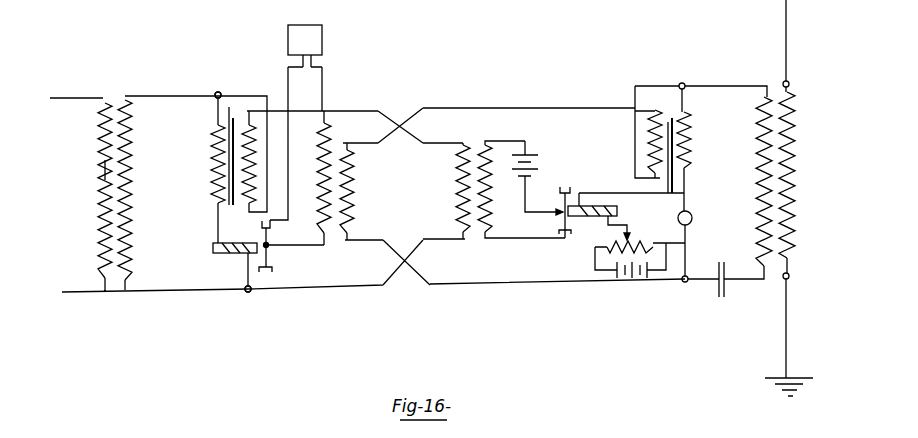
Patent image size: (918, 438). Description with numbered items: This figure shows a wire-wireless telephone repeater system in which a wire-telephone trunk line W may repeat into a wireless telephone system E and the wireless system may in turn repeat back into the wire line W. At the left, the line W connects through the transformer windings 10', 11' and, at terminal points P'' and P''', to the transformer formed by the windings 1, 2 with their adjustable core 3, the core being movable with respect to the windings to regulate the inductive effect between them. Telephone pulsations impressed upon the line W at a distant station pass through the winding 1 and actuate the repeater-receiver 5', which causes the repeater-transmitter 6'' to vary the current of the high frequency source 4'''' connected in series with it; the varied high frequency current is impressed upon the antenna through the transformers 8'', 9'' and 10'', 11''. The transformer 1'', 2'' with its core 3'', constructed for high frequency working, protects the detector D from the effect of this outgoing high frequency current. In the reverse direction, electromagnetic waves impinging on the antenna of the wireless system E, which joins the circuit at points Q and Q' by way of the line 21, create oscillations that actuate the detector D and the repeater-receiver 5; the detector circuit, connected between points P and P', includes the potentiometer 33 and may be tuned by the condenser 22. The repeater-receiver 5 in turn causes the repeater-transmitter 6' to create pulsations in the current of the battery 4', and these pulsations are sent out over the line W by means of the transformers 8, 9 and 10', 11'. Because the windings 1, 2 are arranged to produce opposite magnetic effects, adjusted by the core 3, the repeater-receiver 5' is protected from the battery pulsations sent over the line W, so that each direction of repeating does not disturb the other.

The transformer winding 11' is at (88, 190).
The wire-telephone trunk line W is at (100, 171).
The transformer winding 10' is at (140, 190).
The transformer winding 1 is at (206, 164).
The transformer winding 2 is at (261, 164).
The adjustable core 3 is at (209, 167).
The terminal point P'' is at (229, 82).
The terminal point P''' is at (257, 301).
The repeater-receiver 5' is at (228, 261).
The repeater-transmitter 6'' is at (285, 250).
The transformer winding 8'' is at (313, 178).
The transformer winding 9'' is at (361, 191).
The high frequency source 4'''' is at (329, 46).
The transformer winding 9 is at (447, 188).
The transformer winding 8 is at (493, 188).
The battery 4' is at (537, 178).
The repeater-transmitter 6' is at (550, 229).
The repeater-receiver 5 is at (608, 219).
The potentiometer 33 is at (660, 267).
The high frequency transformer winding 2'' is at (631, 132).
The core 3'' is at (695, 149).
The high frequency transformer winding 1'' is at (700, 140).
The terminal point P is at (685, 73).
The detector D is at (692, 221).
The terminal point P' is at (689, 296).
The condenser 22 is at (733, 287).
The transformer winding 10'' is at (748, 181).
The transformer winding 11'' is at (806, 175).
The wireless telephone system E is at (789, 319).
The terminal point Q is at (801, 74).
The terminal point Q' is at (801, 285).
The line wire 21 is at (785, 36).